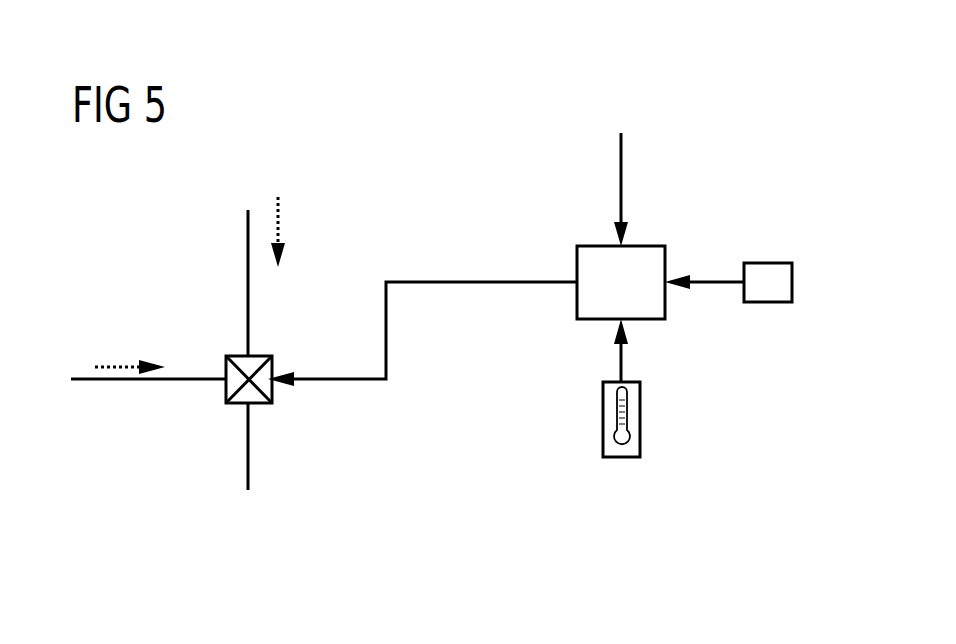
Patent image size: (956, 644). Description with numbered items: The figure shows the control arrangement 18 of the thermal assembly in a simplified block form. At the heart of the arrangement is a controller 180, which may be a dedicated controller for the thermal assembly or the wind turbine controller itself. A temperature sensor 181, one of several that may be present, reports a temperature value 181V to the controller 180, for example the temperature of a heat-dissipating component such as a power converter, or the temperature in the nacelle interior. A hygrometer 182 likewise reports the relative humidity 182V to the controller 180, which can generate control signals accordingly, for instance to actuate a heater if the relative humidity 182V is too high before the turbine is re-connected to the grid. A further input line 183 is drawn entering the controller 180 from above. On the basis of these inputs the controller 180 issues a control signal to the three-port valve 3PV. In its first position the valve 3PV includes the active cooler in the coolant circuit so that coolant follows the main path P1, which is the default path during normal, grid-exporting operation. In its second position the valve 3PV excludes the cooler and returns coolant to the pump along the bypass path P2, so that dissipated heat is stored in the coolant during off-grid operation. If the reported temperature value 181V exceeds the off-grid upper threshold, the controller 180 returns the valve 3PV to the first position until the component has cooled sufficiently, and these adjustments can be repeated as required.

The control arrangement 18 is at (508, 497).
The controller 180 is at (597, 244).
The temperature sensor 181 is at (641, 418).
The temperature value 181V is at (621, 363).
The hygrometer 182 is at (769, 262).
The relative humidity 182V is at (718, 280).
The input signal line 183 is at (621, 173).
The three-port valve 3PV is at (290, 340).
The main path P1 is at (280, 220).
The bypass path P2 is at (110, 364).